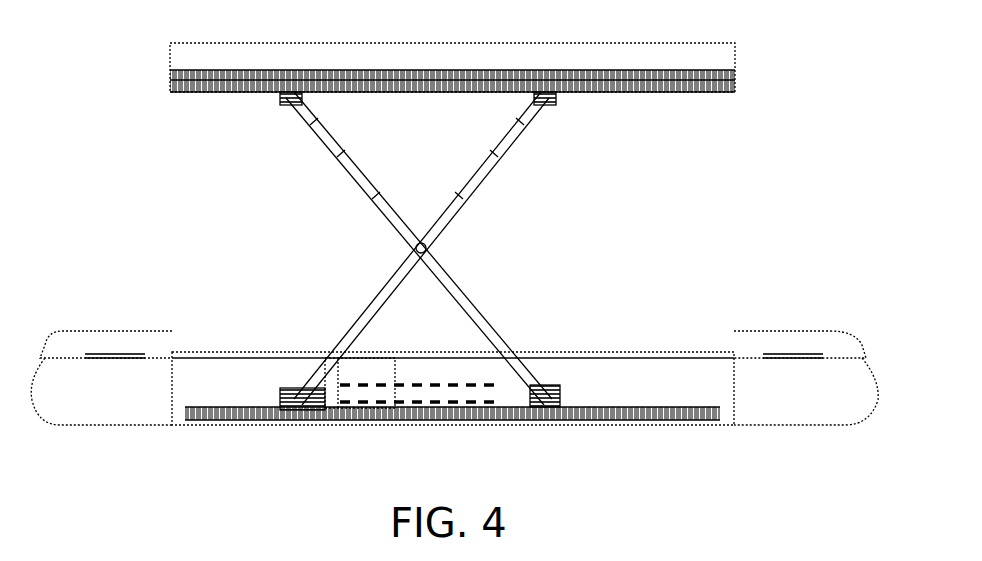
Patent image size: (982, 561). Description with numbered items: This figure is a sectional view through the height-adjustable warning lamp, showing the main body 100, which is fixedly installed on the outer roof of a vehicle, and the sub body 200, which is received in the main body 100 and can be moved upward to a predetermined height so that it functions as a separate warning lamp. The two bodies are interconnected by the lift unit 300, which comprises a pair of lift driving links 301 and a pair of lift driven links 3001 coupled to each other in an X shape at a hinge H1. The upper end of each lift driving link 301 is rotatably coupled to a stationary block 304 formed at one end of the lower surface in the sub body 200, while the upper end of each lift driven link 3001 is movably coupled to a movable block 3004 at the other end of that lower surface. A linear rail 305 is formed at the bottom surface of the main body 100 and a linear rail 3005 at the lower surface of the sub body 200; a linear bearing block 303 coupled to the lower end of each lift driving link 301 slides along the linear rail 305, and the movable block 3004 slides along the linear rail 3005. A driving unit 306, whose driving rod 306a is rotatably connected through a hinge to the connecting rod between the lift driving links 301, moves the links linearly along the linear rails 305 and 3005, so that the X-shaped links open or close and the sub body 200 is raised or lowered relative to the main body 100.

The sub body 200 is at (383, 70).
The linear rail 3005 is at (660, 95).
The main body 100 is at (218, 378).
The linear rail 305 is at (655, 405).
The lift unit 300 is at (268, 233).
The lift driving link 301 is at (333, 173).
The lift driven link 3001 is at (478, 170).
The hinge H1 is at (436, 250).
The stationary block 304 is at (285, 98).
The movable block 3004 is at (550, 102).
The linear bearing block 303 is at (560, 382).
The driving unit 306 is at (415, 422).
The driving rod 306a is at (500, 420).